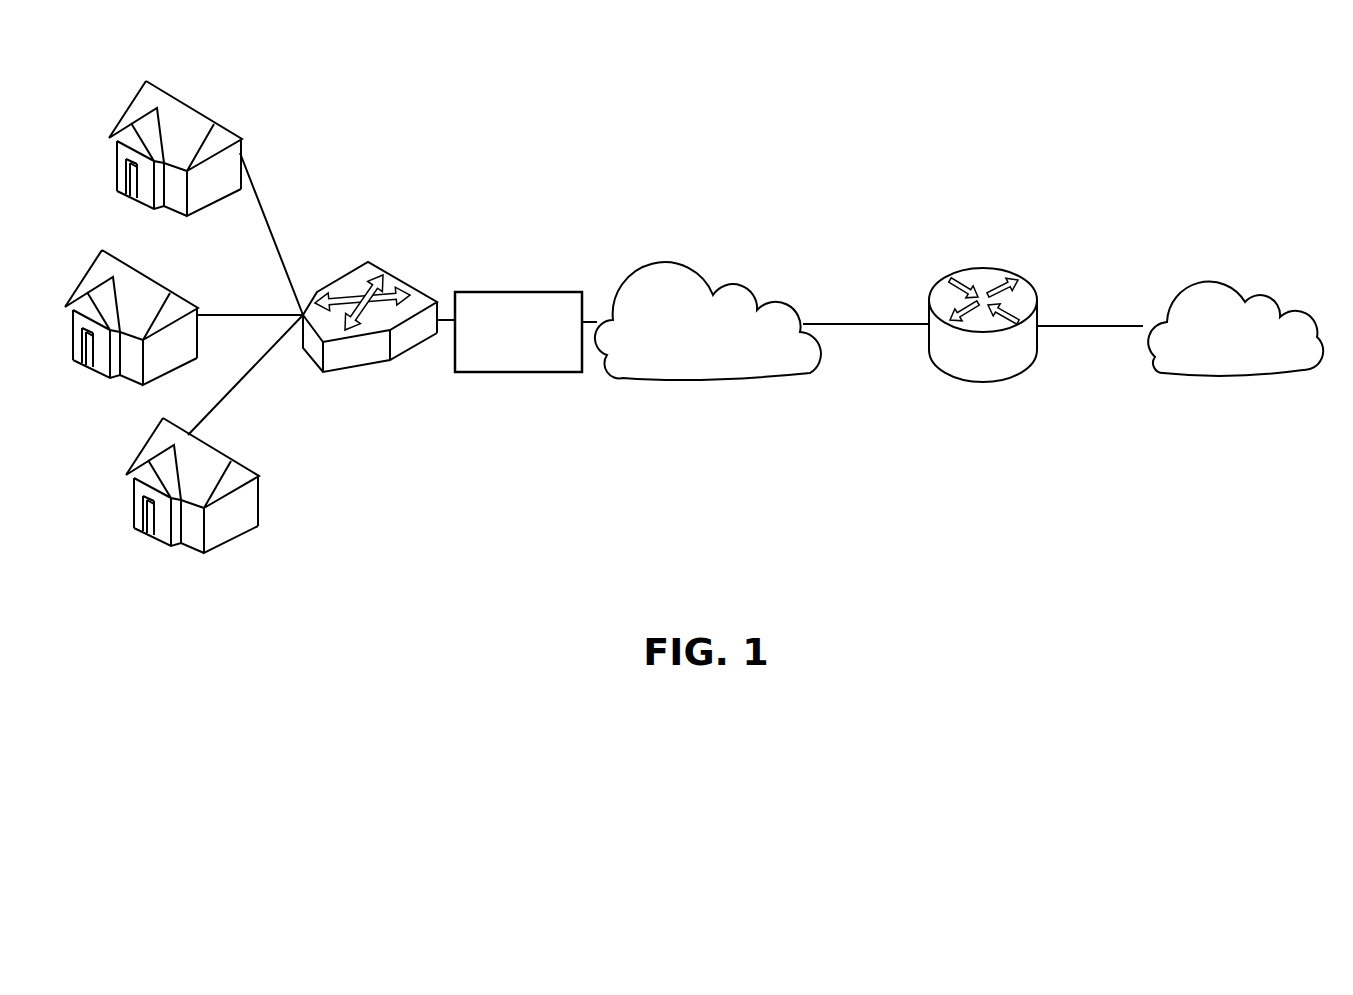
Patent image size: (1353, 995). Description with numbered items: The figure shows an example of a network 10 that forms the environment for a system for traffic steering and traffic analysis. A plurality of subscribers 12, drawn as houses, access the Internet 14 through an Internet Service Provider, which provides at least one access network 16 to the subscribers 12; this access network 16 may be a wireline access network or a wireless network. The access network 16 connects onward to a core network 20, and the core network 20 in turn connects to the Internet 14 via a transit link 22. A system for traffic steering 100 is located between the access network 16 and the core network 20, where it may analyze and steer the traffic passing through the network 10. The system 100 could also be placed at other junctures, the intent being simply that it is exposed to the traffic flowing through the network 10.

The network 10 is at (1016, 181).
The subscribers 12 is at (197, 108).
The Internet 14 is at (1303, 370).
The access network 16 is at (400, 345).
The core network 20 is at (810, 373).
The transit link 22 is at (1027, 365).
The system for traffic steering 100 is at (528, 363).